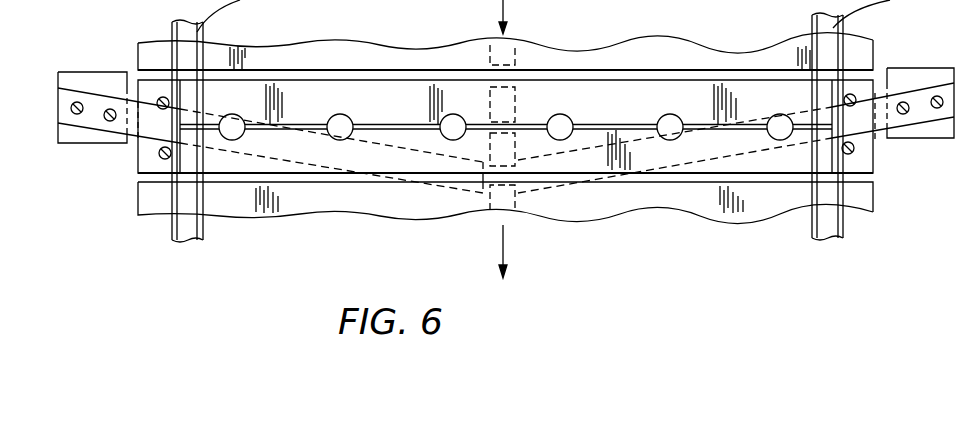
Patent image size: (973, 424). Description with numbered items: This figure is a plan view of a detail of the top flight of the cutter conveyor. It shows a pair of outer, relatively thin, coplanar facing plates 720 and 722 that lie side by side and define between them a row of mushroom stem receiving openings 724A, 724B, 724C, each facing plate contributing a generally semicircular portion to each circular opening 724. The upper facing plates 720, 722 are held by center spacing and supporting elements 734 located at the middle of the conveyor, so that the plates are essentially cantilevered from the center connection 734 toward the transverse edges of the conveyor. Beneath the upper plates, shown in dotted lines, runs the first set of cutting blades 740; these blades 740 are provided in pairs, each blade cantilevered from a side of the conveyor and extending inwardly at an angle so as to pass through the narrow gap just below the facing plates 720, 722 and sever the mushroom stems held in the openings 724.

The facing plate 720 is at (424, 111).
The facing plate 722 is at (382, 167).
The circular opening 724 is at (234, 130).
The mushroom stem receiving opening 724A is at (784, 128).
The mushroom stem receiving opening 724B is at (674, 118).
The mushroom stem receiving opening 724C is at (561, 130).
The center spacing and supporting element 734 is at (507, 200).
The first set of cutting blades 740 is at (133, 127).